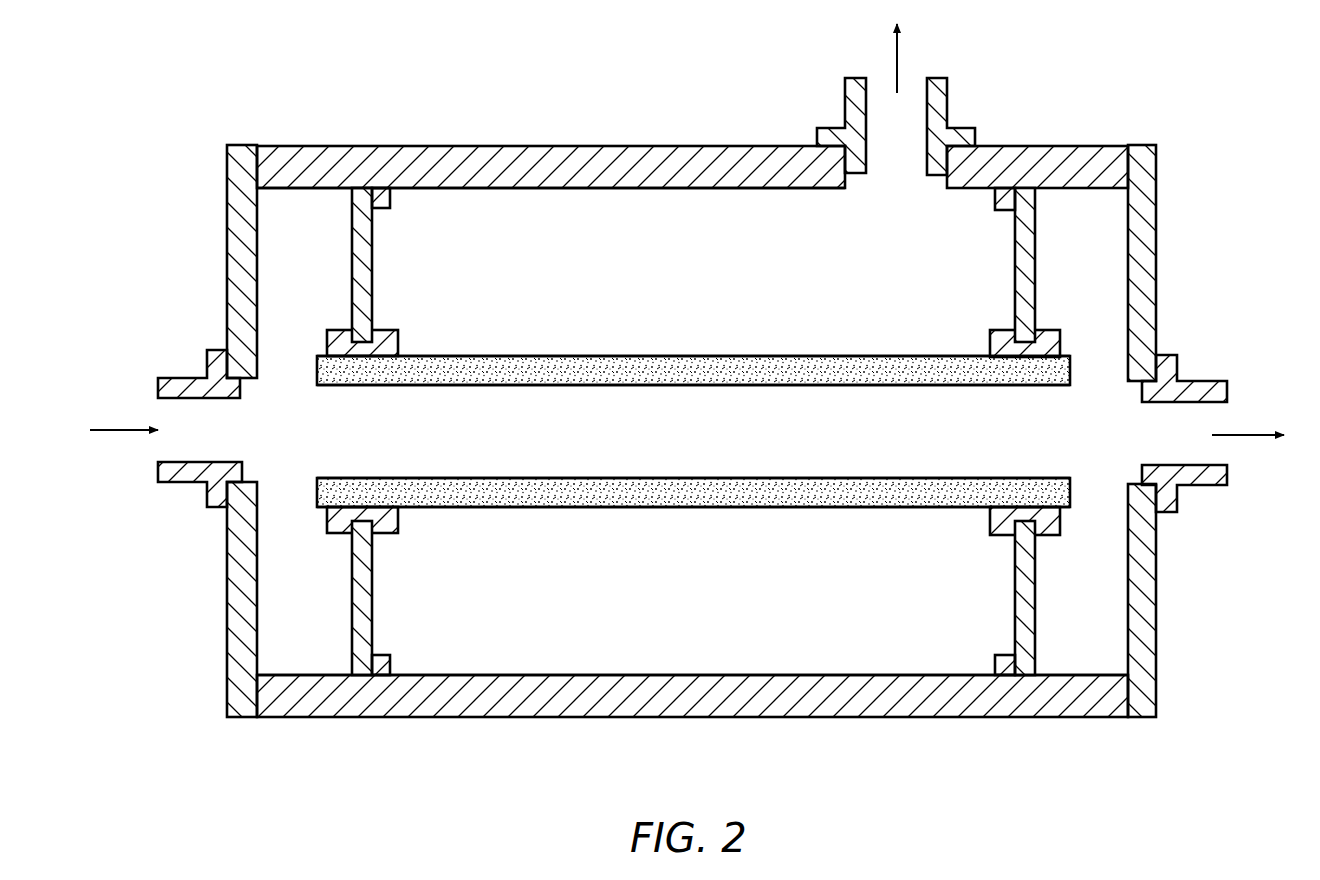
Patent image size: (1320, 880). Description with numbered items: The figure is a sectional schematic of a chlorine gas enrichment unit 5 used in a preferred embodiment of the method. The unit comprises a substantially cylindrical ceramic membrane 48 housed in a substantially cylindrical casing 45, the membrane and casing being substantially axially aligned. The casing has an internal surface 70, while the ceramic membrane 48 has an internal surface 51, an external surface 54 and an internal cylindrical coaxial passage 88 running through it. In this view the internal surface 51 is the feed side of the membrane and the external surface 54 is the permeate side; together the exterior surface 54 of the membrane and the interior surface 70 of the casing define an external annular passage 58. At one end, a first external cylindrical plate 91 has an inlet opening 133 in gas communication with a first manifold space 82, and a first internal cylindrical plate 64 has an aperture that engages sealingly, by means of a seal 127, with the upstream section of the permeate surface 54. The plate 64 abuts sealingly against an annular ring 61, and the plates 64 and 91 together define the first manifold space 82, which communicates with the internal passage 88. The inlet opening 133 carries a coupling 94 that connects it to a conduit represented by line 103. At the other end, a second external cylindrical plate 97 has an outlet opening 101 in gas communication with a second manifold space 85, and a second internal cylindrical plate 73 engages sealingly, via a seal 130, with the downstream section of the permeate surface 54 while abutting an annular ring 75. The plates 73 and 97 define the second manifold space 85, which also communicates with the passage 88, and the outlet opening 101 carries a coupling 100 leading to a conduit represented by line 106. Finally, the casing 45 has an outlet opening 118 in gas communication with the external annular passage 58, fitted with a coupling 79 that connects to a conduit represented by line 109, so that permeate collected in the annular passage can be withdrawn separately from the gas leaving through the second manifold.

The chlorine gas enrichment unit 5 is at (366, 766).
The cylindrical casing 45 is at (688, 150).
The ceramic membrane 48 is at (820, 358).
The internal surface 51 is at (540, 388).
The external surface 54 is at (627, 355).
The external annular passage 58 is at (686, 282).
The annular ring 61 is at (392, 202).
The first internal cylindrical plate 64 is at (373, 287).
The internal surface 70 is at (607, 190).
The second internal cylindrical plate 73 is at (1020, 290).
The annular ring 75 is at (998, 203).
The coupling 79 is at (852, 100).
The first manifold space 82 is at (316, 603).
The second manifold space 85 is at (1096, 603).
The internal cylindrical coaxial passage 88 is at (897, 453).
The first external cylindrical plate 91 is at (237, 220).
The coupling 94 is at (205, 375).
The second external cylindrical plate 97 is at (1157, 243).
The coupling 100 is at (1198, 376).
The outlet opening 101 is at (1157, 430).
The line 103 is at (115, 432).
The line 106 is at (1253, 435).
The line 109 is at (905, 62).
The outlet opening 118 is at (894, 186).
The seal 127 is at (400, 345).
The seal 130 is at (1063, 345).
The inlet opening 133 is at (245, 422).